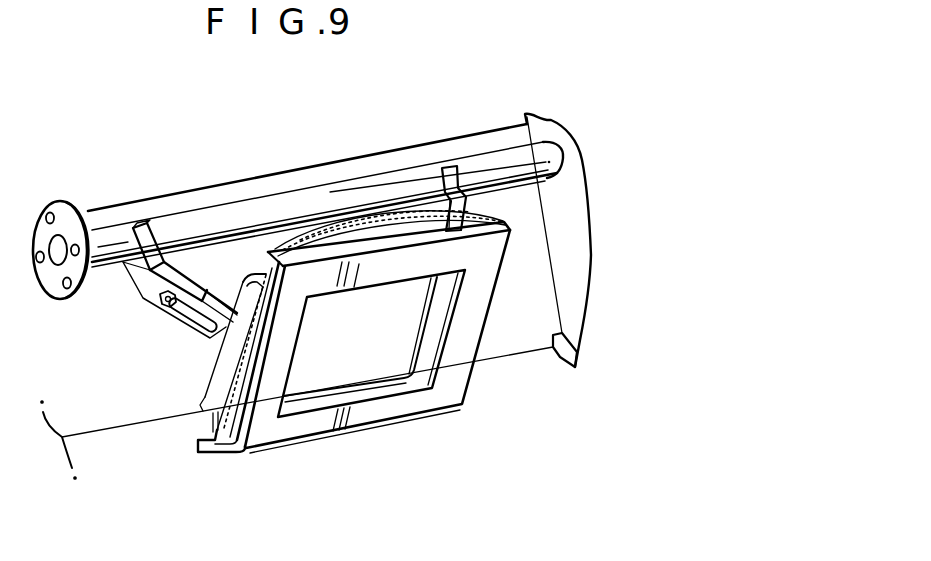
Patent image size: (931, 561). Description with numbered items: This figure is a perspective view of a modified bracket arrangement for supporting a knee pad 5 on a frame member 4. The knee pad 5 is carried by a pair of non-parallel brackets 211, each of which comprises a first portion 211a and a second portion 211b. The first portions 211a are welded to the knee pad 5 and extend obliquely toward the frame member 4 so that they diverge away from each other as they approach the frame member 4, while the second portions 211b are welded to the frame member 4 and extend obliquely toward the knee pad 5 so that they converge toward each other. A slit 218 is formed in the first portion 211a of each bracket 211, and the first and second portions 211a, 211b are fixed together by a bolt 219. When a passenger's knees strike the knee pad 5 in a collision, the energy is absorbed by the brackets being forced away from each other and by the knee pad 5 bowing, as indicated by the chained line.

The frame member 4 is at (333, 194).
The knee pad 5 is at (195, 420).
The bracket 211 is at (189, 258).
The first portion 211a is at (203, 357).
The second portion 211b is at (157, 322).
The slit 218 is at (194, 331).
The bolt 219 is at (162, 305).